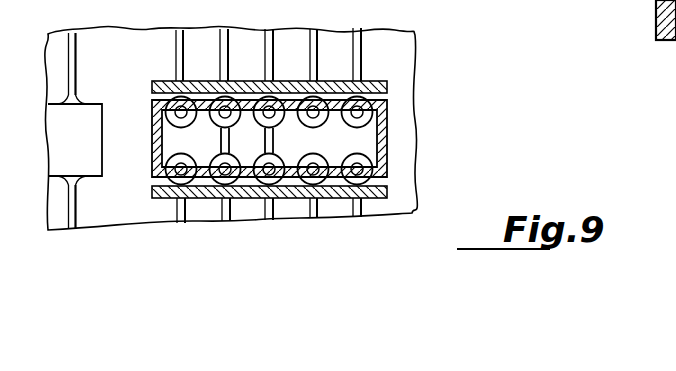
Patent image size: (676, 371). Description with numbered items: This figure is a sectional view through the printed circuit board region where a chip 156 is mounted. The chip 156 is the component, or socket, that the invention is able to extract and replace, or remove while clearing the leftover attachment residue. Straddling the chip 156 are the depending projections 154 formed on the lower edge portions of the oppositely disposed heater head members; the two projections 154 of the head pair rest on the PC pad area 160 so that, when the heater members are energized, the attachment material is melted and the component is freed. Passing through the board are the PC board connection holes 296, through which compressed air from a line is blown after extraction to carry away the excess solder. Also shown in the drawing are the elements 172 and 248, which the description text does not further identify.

The depending projection 154 is at (386, 82).
The chip 156 is at (90, 108).
The PC pad area 160 is at (356, 45).
The housing body 172 is at (103, 215).
The frame 248 is at (388, 125).
The PC board connection holes 296 is at (357, 165).